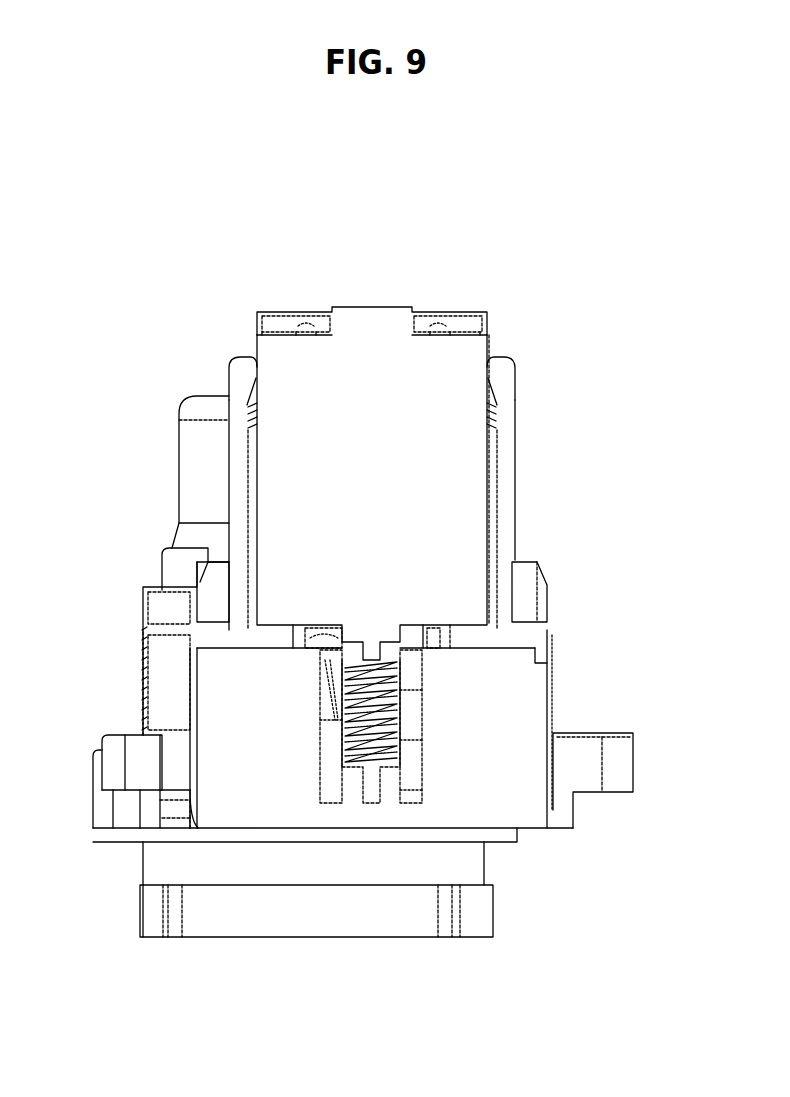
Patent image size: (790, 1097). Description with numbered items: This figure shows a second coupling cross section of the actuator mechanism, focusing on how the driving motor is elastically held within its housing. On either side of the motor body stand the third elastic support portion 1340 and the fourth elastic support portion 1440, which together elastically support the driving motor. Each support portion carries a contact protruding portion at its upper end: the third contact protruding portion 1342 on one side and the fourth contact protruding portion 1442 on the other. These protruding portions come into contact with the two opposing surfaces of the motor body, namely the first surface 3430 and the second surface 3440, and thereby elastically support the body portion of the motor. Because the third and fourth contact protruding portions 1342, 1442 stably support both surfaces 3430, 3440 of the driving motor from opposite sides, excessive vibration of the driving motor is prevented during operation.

The fourth contact protruding portion 1442 is at (247, 356).
The fourth elastic support portion 1440 is at (243, 378).
The third contact protruding portion 1342 is at (497, 356).
The third elastic support portion 1340 is at (500, 378).
The second surface 3440 is at (257, 462).
The first surface 3430 is at (488, 462).